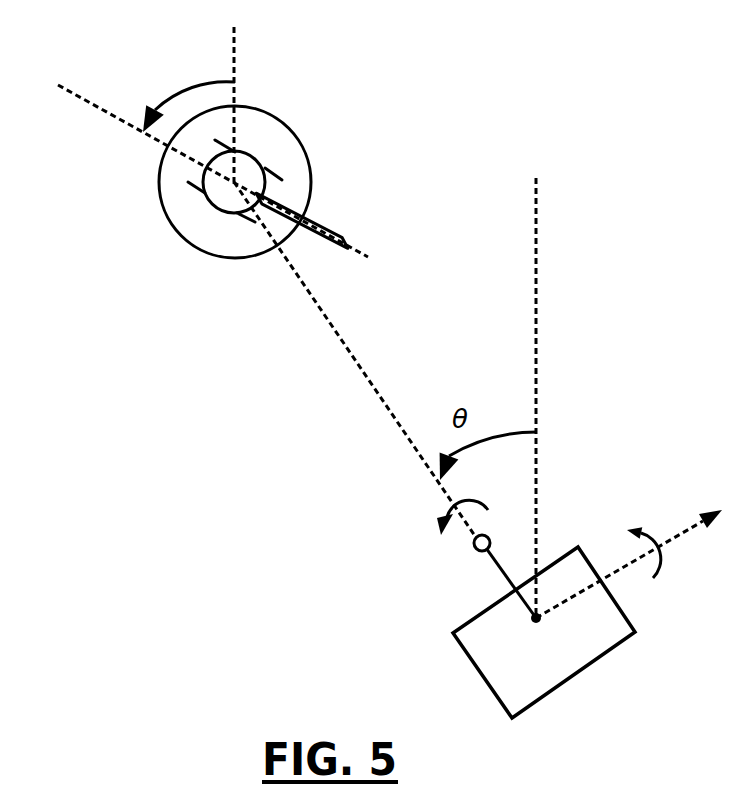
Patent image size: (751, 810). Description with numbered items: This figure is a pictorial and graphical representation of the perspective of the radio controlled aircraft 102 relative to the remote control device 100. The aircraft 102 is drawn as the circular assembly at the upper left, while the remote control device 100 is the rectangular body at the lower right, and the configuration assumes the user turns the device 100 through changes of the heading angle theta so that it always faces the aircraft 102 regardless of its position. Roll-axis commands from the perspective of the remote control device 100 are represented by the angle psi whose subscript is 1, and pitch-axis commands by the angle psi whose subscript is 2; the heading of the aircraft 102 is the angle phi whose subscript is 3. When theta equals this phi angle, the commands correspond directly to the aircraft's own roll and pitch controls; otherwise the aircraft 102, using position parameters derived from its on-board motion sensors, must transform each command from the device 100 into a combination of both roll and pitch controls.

The remote control device 100 is at (544, 632).
The radio controlled aircraft 102 is at (377, 125).
The first rotation angle indicator (psi 1) 1 is at (445, 511).
The second rotation angle indicator (psi 2) 2 is at (644, 534).
The third rotation angle indicator (phi 3) 3 is at (189, 88).